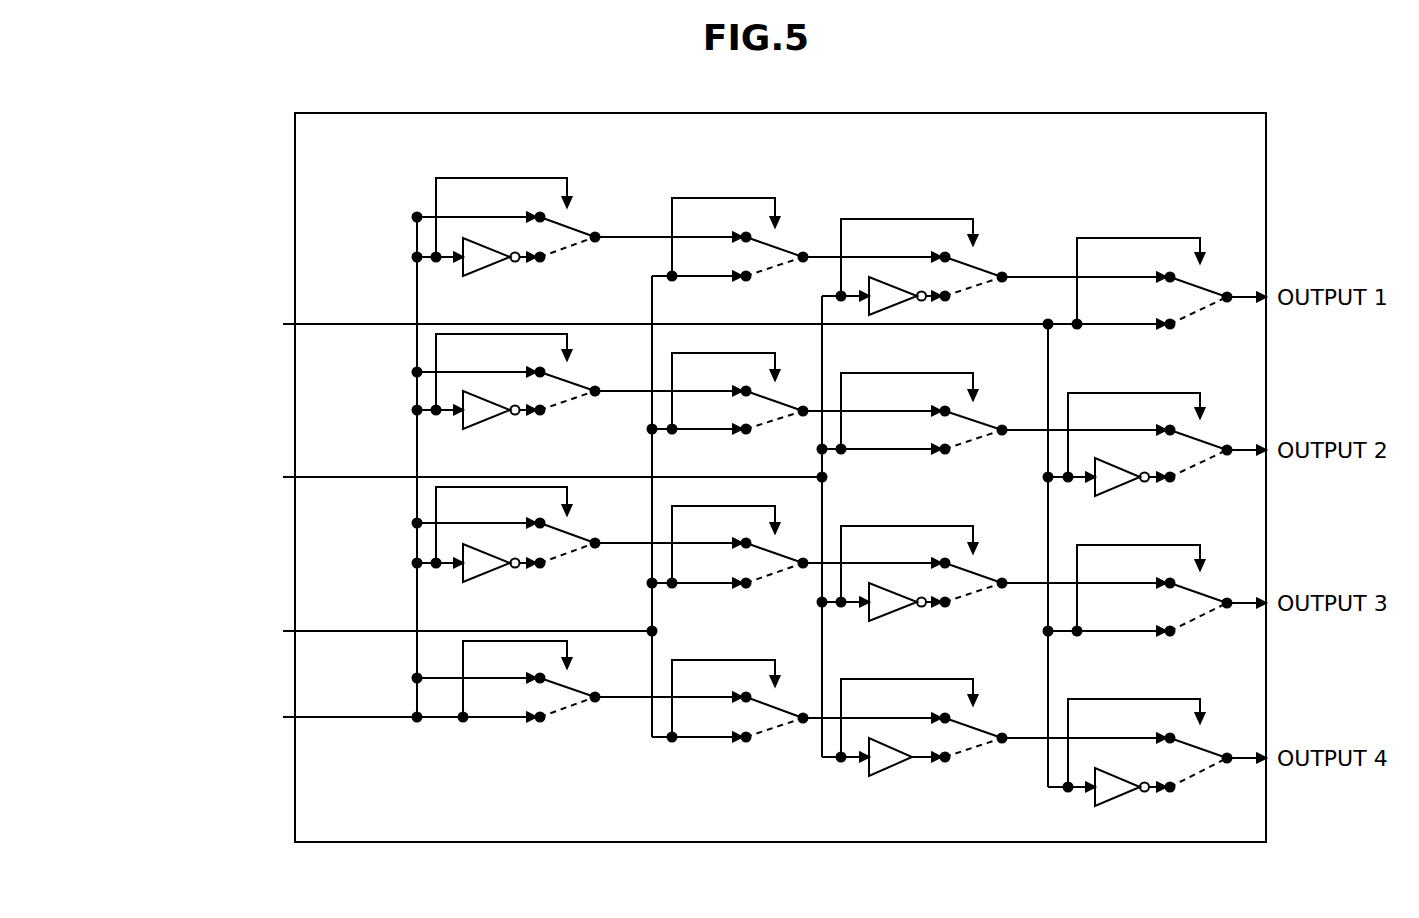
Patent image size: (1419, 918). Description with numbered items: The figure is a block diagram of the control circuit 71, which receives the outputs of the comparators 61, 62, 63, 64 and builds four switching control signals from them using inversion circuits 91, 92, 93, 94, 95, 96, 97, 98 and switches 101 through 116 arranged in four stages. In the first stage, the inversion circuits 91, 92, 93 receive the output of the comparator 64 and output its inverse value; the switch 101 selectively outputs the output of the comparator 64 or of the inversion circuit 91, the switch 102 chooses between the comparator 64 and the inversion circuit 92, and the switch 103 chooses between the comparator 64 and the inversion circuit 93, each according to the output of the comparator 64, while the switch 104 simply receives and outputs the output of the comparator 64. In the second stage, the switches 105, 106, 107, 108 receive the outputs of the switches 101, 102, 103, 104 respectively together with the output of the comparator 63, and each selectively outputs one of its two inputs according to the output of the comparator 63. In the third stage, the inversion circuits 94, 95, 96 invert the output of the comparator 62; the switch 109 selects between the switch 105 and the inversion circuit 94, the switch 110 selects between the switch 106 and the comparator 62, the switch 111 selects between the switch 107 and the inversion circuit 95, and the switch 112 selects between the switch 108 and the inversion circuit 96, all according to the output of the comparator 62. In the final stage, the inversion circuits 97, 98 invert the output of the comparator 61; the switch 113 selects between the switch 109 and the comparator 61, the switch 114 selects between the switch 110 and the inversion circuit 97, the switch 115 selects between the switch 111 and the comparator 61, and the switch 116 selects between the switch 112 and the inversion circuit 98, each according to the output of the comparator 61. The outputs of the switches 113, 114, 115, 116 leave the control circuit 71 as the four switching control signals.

The control circuit 71 is at (973, 112).
The comparator 61 is at (592, 543).
The comparator 62 is at (479, 526).
The comparator 63 is at (394, 506).
The comparator 64 is at (335, 479).
The inversion circuit 91 is at (490, 265).
The inversion circuit 92 is at (490, 418).
The inversion circuit 93 is at (490, 571).
The inversion circuit 94 is at (893, 305).
The inversion circuit 95 is at (893, 611).
The inversion circuit 96 is at (893, 766).
The inversion circuit 97 is at (1118, 487).
The inversion circuit 98 is at (1118, 797).
The switch 101 is at (572, 230).
The switch 102 is at (572, 384).
The switch 103 is at (572, 536).
The switch 104 is at (572, 690).
The switch 105 is at (768, 258).
The switch 106 is at (768, 412).
The switch 107 is at (768, 566).
The switch 108 is at (768, 720).
The switch 109 is at (978, 266).
The switch 110 is at (978, 420).
The switch 111 is at (978, 573).
The switch 112 is at (978, 728).
The switch 113 is at (1202, 306).
The switch 114 is at (1202, 460).
The switch 115 is at (1202, 613).
The switch 116 is at (1202, 768).